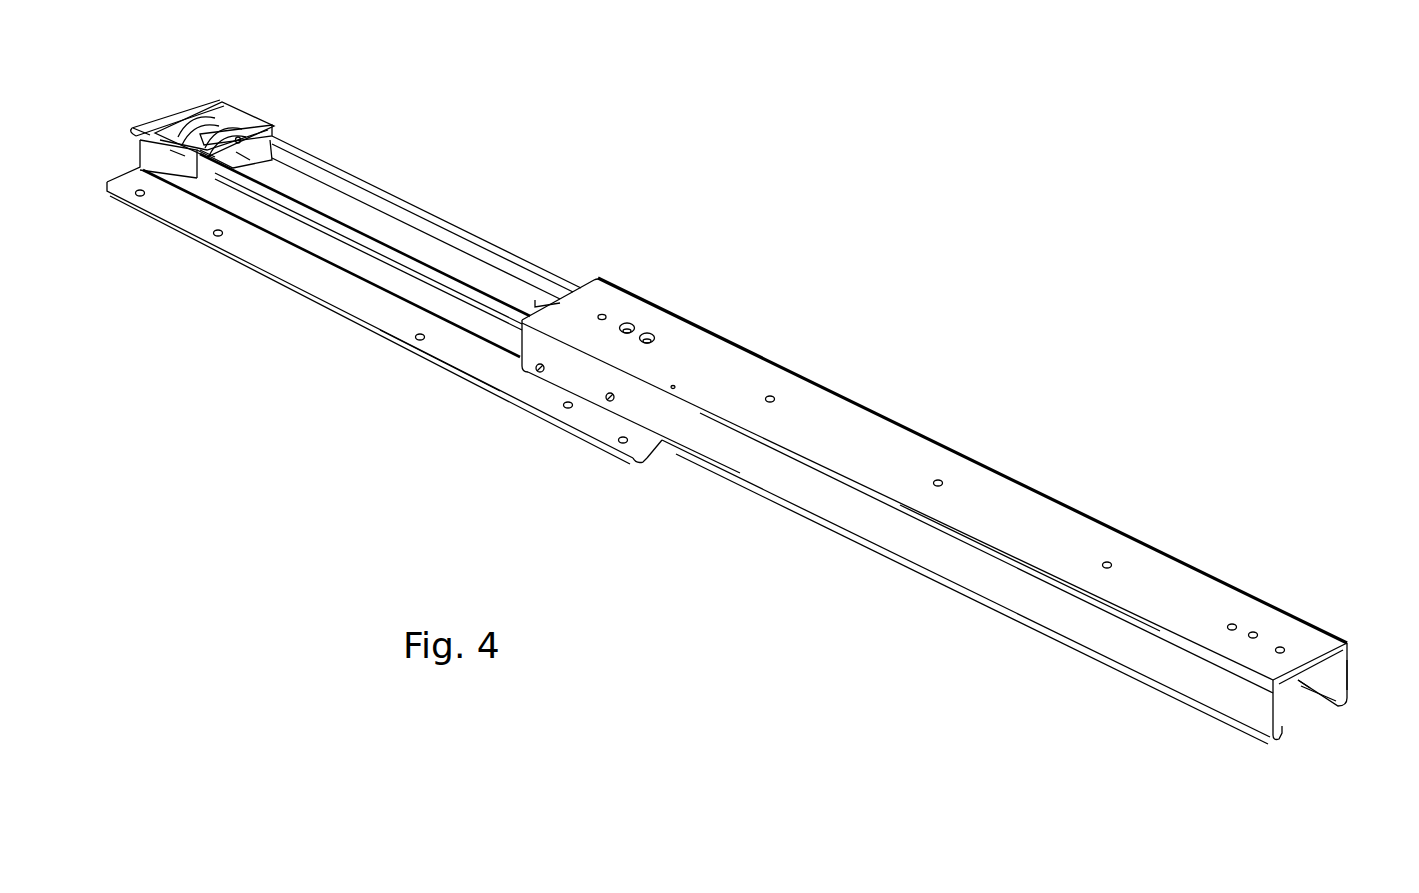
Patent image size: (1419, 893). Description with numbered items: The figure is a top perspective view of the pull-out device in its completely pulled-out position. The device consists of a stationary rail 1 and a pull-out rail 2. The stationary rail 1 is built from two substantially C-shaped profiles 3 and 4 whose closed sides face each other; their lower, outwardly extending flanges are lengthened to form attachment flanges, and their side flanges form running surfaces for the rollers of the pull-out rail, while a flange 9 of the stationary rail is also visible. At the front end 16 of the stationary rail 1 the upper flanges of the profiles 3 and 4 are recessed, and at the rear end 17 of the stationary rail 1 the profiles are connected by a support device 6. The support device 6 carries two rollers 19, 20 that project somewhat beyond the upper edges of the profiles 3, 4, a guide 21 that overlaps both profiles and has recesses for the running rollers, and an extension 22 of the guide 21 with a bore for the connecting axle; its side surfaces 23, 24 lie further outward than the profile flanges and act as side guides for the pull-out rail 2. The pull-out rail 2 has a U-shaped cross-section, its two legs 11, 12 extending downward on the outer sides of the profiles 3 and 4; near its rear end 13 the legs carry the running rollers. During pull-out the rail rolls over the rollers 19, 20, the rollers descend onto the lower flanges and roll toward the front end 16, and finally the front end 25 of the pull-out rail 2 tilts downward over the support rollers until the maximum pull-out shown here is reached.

The stationary rail 1 is at (383, 337).
The pull-out rail 2 is at (857, 550).
The C-shaped profile 3 is at (397, 257).
The C-shaped profile 4 is at (385, 197).
The support device 6 is at (251, 190).
The flange of first rail 9 is at (495, 373).
The leg of the pull-out rail 11 is at (1162, 664).
The leg of the pull-out rail 12 is at (1337, 668).
The rear end of the pull-out rail 13 is at (548, 290).
The front end of the stationary rail 16 is at (663, 444).
The rear end of the stationary rail 17 is at (137, 147).
The roller of the support device 19 is at (207, 145).
The roller of the support device 20 is at (228, 122).
The guide 21 is at (273, 132).
The extension 22 is at (242, 158).
The side surface of the support device 23 is at (177, 153).
The side surface of the support device 24 is at (257, 108).
The front end of the pull-out rail 25 is at (1296, 676).